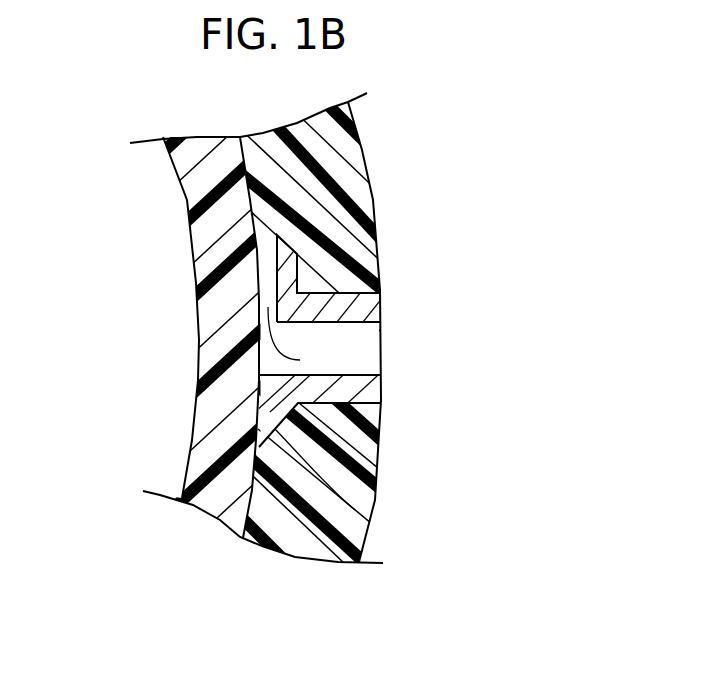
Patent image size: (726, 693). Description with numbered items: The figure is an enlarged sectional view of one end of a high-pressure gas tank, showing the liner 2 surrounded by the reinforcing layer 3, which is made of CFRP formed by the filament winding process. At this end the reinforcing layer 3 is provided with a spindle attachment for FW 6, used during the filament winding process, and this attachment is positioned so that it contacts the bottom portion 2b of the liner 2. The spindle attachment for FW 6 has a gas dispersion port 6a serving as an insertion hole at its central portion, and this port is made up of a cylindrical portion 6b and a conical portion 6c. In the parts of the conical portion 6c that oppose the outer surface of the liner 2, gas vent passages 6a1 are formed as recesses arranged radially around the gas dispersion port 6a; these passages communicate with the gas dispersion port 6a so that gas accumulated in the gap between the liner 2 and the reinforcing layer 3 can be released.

The liner 2 is at (184, 250).
The bottom portion 2b is at (200, 342).
The reinforcing layer 3 is at (360, 194).
The spindle attachment for FW 6 is at (344, 386).
The gas dispersion port 6a is at (360, 323).
The gas vent passage 6a1 is at (300, 360).
The cylindrical portion 6b is at (375, 393).
The conical portion 6c is at (355, 510).